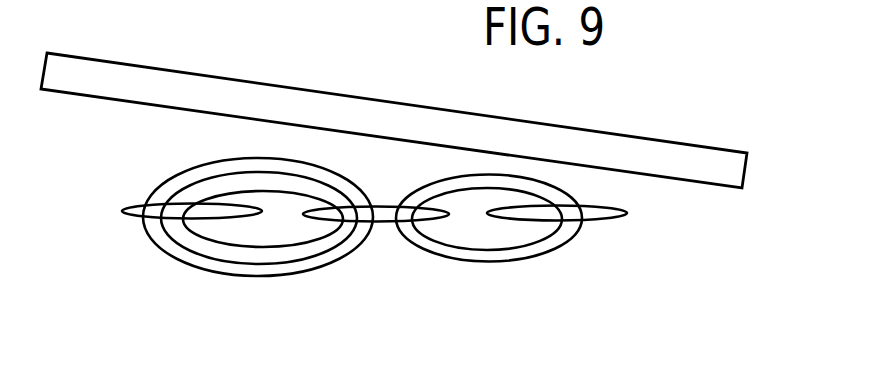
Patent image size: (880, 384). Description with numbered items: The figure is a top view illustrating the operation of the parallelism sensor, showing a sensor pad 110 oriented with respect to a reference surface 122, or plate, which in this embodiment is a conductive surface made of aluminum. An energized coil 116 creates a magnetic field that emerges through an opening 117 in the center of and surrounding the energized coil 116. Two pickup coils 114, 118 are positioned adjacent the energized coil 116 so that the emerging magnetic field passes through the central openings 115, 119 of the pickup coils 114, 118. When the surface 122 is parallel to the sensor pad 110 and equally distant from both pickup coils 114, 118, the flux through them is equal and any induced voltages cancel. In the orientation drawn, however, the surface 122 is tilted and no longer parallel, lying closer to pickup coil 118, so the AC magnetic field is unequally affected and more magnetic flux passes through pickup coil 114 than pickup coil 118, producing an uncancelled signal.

The sensor pad 110 is at (436, 247).
The pickup coil 114 is at (224, 236).
The central opening 115 is at (165, 208).
The energized coil 116 is at (376, 250).
The opening 117 is at (386, 204).
The pickup coil 118 is at (509, 257).
The central opening 119 is at (594, 216).
The reference surface 122 is at (394, 120).